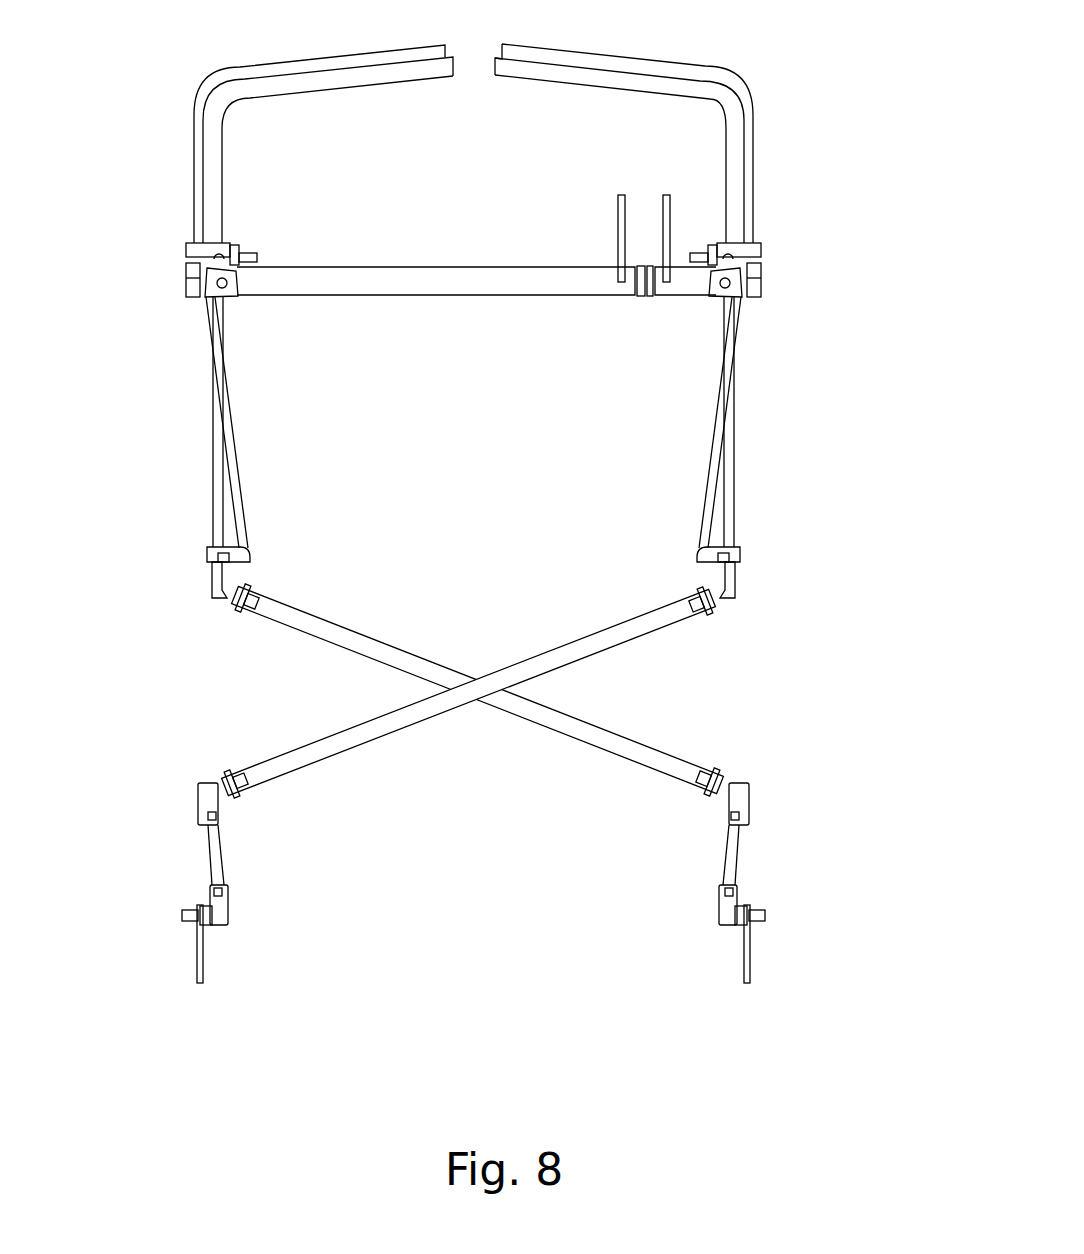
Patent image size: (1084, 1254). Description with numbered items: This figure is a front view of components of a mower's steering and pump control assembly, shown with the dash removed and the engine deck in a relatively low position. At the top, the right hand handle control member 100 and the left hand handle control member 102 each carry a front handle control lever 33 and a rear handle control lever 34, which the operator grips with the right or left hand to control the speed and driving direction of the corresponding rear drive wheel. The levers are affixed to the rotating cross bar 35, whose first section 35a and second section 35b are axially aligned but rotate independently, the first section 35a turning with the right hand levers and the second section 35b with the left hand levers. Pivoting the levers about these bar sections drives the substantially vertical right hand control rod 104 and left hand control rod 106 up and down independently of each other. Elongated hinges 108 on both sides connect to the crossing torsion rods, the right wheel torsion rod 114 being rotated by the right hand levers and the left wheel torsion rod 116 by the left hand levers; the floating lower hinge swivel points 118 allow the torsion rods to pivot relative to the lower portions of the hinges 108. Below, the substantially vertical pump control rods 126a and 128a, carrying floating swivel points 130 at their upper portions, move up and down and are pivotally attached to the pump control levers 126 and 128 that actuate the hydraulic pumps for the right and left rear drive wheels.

The front handle control lever 33 is at (365, 52).
The rear handle control lever 34 is at (583, 72).
The rotating cross bar 35 is at (476, 327).
The first section of cross bar 35a is at (374, 285).
The second section of cross bar 35b is at (690, 282).
The right hand handle control member 100 is at (162, 85).
The left hand handle control member 102 is at (575, 122).
The right hand control rod 104 is at (219, 468).
The left hand control rod 106 is at (743, 478).
The elongated hinge 108 is at (238, 500).
The right wheel torsion rod 114 is at (402, 655).
The left wheel torsion rod 116 is at (587, 655).
The floating lower hinge swivel point 118 is at (219, 612).
The floating pump control rod swivel point 130 is at (195, 777).
The pump control rod 128a is at (215, 865).
The pump control rod 126a is at (730, 850).
The pump control lever 128 is at (202, 970).
The pump control lever 126 is at (752, 960).